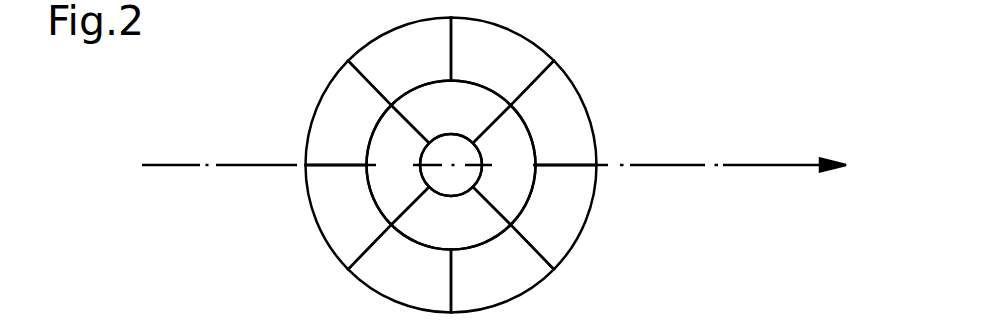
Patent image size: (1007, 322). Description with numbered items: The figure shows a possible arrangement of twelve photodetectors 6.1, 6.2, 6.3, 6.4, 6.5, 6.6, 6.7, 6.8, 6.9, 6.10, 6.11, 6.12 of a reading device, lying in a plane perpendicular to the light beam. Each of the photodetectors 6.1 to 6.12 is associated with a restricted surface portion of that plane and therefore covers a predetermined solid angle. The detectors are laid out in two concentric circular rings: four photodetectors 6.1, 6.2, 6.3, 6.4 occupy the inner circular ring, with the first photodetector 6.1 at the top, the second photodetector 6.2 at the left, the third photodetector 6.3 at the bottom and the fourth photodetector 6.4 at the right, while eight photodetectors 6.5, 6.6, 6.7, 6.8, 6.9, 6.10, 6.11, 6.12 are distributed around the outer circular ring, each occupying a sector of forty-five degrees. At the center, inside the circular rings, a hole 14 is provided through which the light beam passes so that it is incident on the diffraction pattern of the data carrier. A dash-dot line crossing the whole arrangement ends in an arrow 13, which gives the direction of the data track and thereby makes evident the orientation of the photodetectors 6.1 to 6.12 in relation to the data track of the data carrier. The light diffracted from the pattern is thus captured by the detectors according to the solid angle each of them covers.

The photodetector 6.1 is at (451, 112).
The photodetector 6.2 is at (398, 165).
The photodetector 6.3 is at (451, 218).
The photodetector 6.4 is at (504, 165).
The photodetector 6.5 is at (554, 113).
The photodetector 6.6 is at (502, 61).
The photodetector 6.7 is at (399, 61).
The photodetector 6.8 is at (349, 113).
The photodetector 6.9 is at (349, 217).
The photodetector 6.10 is at (399, 269).
The photodetector 6.11 is at (502, 269).
The photodetector 6.12 is at (554, 217).
The arrow 13 is at (805, 166).
The hole 14 is at (468, 157).